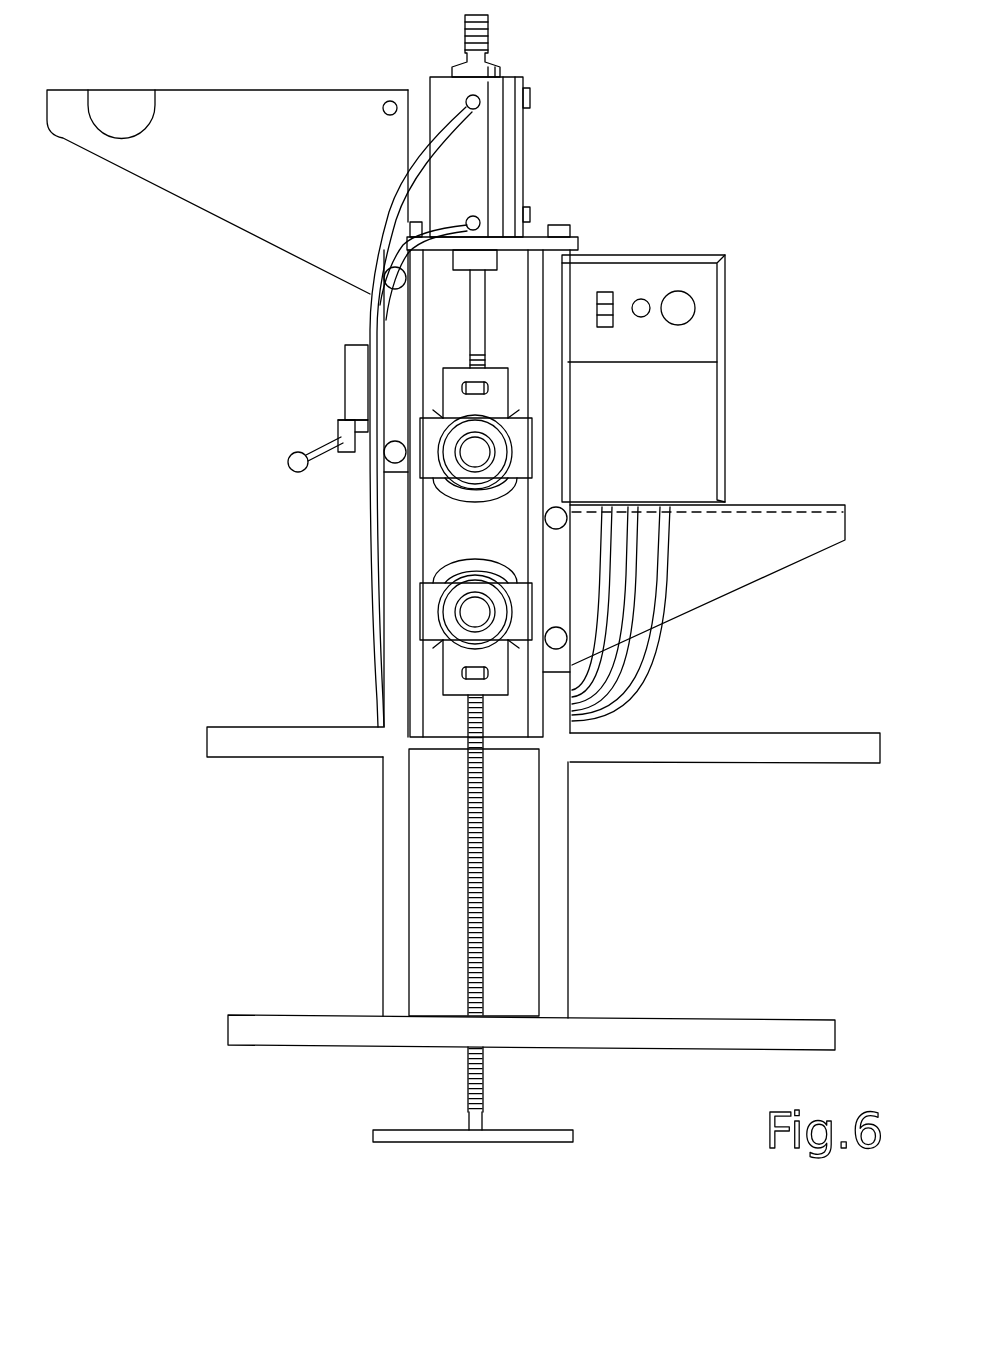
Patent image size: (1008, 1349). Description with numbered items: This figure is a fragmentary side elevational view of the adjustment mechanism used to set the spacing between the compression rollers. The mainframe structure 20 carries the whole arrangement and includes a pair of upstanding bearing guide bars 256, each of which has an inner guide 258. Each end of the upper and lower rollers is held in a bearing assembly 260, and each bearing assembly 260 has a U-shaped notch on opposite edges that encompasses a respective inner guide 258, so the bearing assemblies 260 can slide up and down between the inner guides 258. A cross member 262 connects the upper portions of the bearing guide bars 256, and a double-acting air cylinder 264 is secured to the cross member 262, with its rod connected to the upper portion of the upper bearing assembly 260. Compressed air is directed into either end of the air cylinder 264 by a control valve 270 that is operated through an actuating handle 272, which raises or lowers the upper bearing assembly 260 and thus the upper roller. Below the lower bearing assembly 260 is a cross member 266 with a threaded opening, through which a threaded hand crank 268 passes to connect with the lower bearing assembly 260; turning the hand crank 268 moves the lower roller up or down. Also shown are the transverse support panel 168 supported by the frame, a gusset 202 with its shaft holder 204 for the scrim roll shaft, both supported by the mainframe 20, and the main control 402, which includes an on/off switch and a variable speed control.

The mainframe structure 20 is at (258, 1072).
The transverse support panel 168 is at (738, 497).
The gusset 202 is at (228, 113).
The shaft holder 204 is at (118, 137).
The bearing guide bar 256 is at (398, 553).
The inner guide 258 is at (440, 312).
The bearing assembly 260 is at (430, 462).
The cross member 262 is at (532, 243).
The double-acting air cylinder 264 is at (493, 127).
The cross member 266 is at (443, 745).
The threaded hand crank 268 is at (482, 940).
The control valve 270 is at (358, 368).
The actuating handle 272 is at (290, 457).
The main control 402 is at (672, 415).